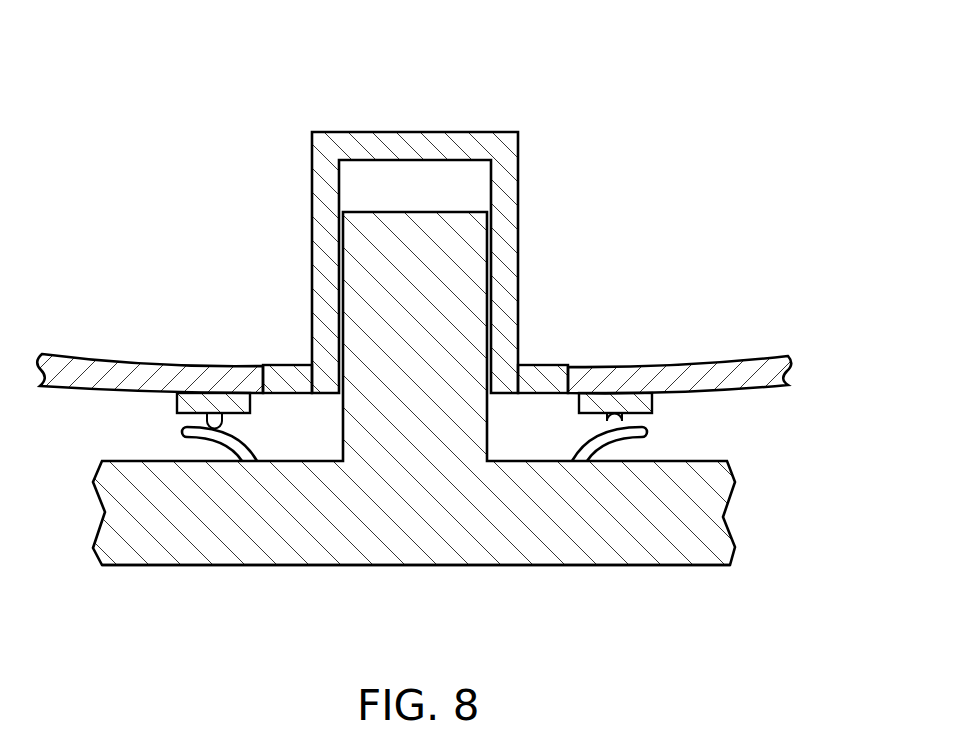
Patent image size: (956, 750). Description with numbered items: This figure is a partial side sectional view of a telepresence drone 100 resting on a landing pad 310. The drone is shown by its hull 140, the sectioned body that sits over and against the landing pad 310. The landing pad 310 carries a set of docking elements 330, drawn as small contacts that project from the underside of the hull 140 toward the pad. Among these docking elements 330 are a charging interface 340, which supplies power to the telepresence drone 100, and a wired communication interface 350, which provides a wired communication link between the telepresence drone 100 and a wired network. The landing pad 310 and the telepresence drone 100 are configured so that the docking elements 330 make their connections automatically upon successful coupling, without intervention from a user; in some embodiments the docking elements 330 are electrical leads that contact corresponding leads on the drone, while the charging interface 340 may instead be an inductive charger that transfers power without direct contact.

The telepresence drone 100 is at (436, 336).
The hull 140 is at (712, 346).
The landing pad 310 is at (416, 609).
The docking elements 330 is at (465, 388).
The charging interface 340 is at (187, 432).
The wired communication interface 350 is at (642, 432).